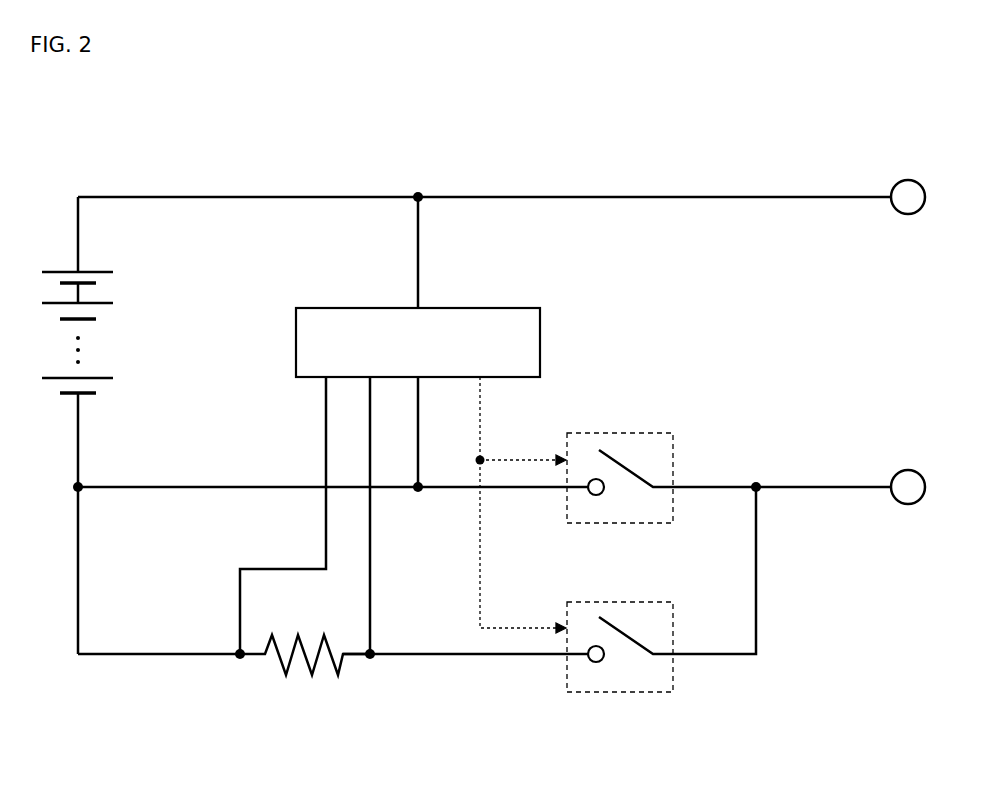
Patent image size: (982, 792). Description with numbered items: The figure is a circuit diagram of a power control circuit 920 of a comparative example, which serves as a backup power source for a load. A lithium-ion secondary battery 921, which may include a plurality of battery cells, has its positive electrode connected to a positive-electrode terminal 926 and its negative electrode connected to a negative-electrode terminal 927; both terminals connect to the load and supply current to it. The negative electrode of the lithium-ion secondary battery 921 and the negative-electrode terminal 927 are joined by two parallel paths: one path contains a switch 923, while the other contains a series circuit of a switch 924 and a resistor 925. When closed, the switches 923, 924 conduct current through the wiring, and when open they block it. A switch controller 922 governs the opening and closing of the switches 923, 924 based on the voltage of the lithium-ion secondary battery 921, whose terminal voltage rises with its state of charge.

The power control circuit 920 is at (213, 157).
The lithium-ion secondary battery 921 is at (103, 293).
The switch controller 922 is at (458, 308).
The switch 923 is at (628, 433).
The switch 924 is at (628, 602).
The resistor 925 is at (323, 665).
The positive-electrode terminal 926 is at (905, 180).
The negative-electrode terminal 927 is at (905, 470).